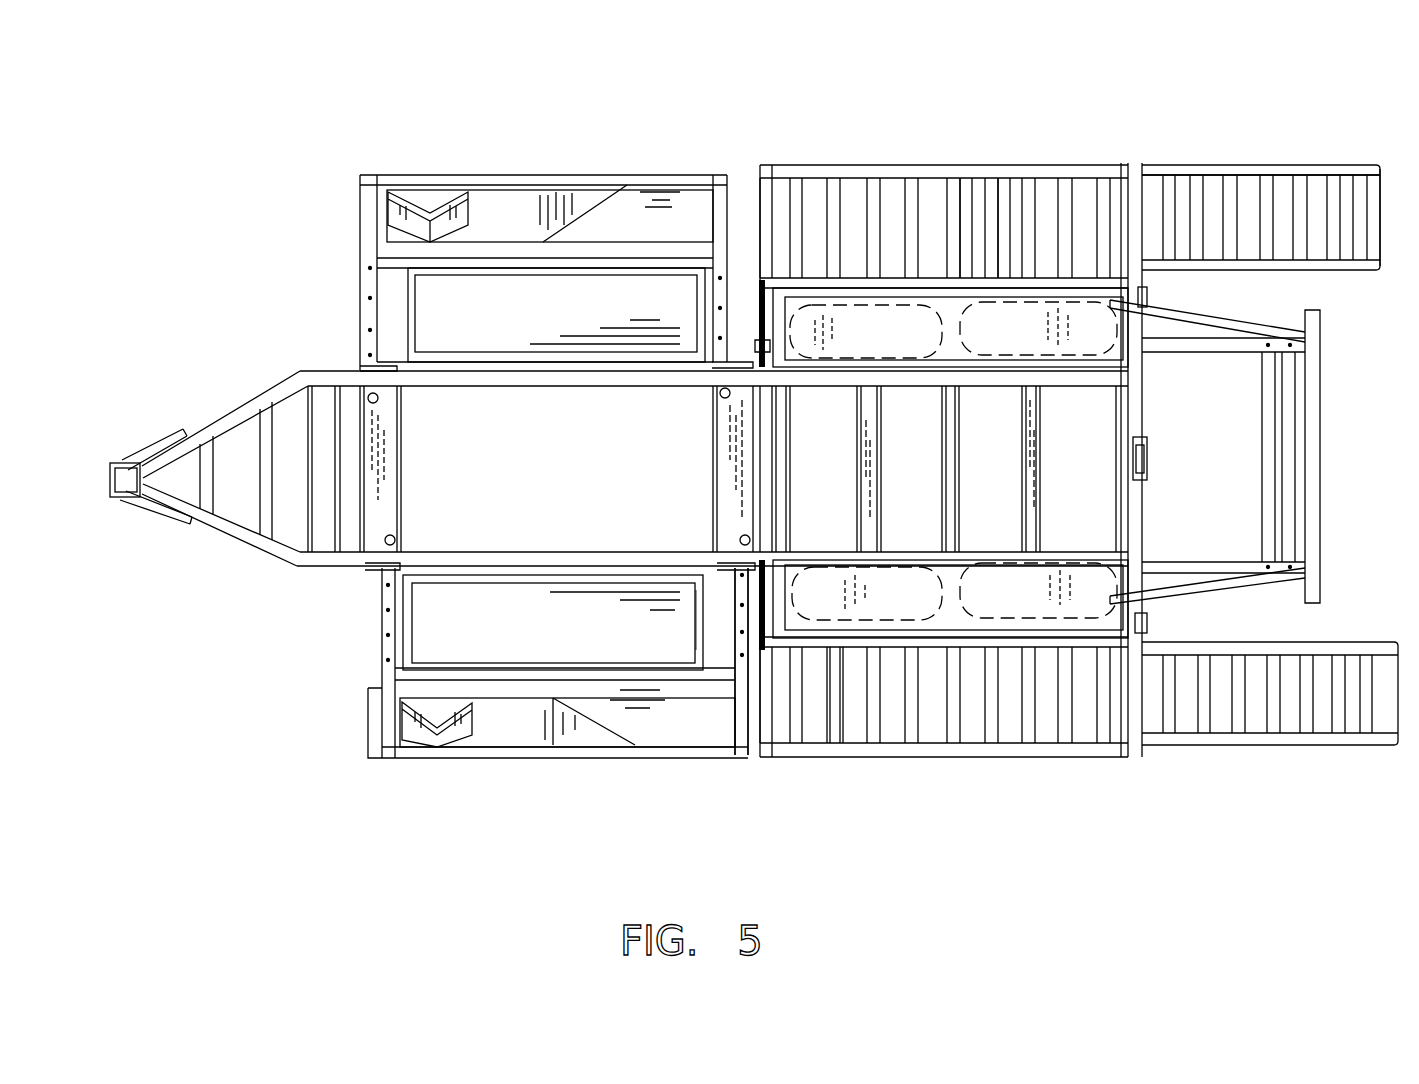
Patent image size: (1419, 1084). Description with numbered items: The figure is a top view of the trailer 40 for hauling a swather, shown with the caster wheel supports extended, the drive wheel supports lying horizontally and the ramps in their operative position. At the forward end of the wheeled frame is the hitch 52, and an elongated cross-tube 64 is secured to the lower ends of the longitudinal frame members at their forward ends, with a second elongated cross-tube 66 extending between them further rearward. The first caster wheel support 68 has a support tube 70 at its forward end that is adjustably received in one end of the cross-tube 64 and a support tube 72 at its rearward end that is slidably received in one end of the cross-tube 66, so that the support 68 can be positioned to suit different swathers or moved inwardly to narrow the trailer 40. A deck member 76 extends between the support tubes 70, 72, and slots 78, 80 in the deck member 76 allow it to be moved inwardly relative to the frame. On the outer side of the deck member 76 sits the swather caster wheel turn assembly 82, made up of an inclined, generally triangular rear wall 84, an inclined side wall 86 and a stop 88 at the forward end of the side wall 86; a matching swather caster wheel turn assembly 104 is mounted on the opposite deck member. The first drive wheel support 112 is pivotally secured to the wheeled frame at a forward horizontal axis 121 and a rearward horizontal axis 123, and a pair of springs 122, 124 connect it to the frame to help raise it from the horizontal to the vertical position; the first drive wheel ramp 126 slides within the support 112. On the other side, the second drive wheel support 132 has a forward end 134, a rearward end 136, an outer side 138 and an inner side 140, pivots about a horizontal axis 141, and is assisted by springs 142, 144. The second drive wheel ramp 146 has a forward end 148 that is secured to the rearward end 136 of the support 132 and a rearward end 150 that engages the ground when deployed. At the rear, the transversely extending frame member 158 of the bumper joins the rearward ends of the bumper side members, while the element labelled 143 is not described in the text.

The trailer 40 is at (960, 402).
The hitch 52 is at (238, 392).
The cross-tube 64 is at (402, 467).
The cross-tube 66 is at (711, 446).
The first caster wheel support 68 is at (362, 672).
The support tube 70 is at (376, 626).
The support tube 72 is at (743, 722).
The deck member 76 is at (632, 640).
The slot 78 is at (376, 602).
The slot 80 is at (722, 645).
The swather caster wheel turn assembly 82 is at (493, 726).
The rear wall 84 is at (596, 740).
The side wall 86 is at (512, 714).
The stop 88 is at (420, 716).
The swather caster wheel turn assembly 104 is at (523, 216).
The first drive wheel support 112 is at (1008, 762).
The horizontal axis 121 is at (836, 648).
The spring 122 is at (772, 582).
The horizontal axis 123 is at (1146, 618).
The spring 124 is at (1146, 532).
The first drive wheel ramp 126 is at (1337, 638).
The second drive wheel support 132 is at (1012, 160).
The forward end 134 is at (746, 190).
The rearward end 136 is at (1139, 176).
The outer side 138 is at (968, 167).
The inner side 140 is at (1042, 282).
The horizontal axis 141 is at (758, 318).
The spring 142 is at (758, 347).
The tailgate brace 143 is at (1152, 290).
The spring 144 is at (1146, 391).
The second drive wheel ramp 146 is at (1331, 163).
The forward end 148 is at (1150, 222).
The rearward end 150 is at (1381, 192).
The frame member 158 is at (1322, 440).